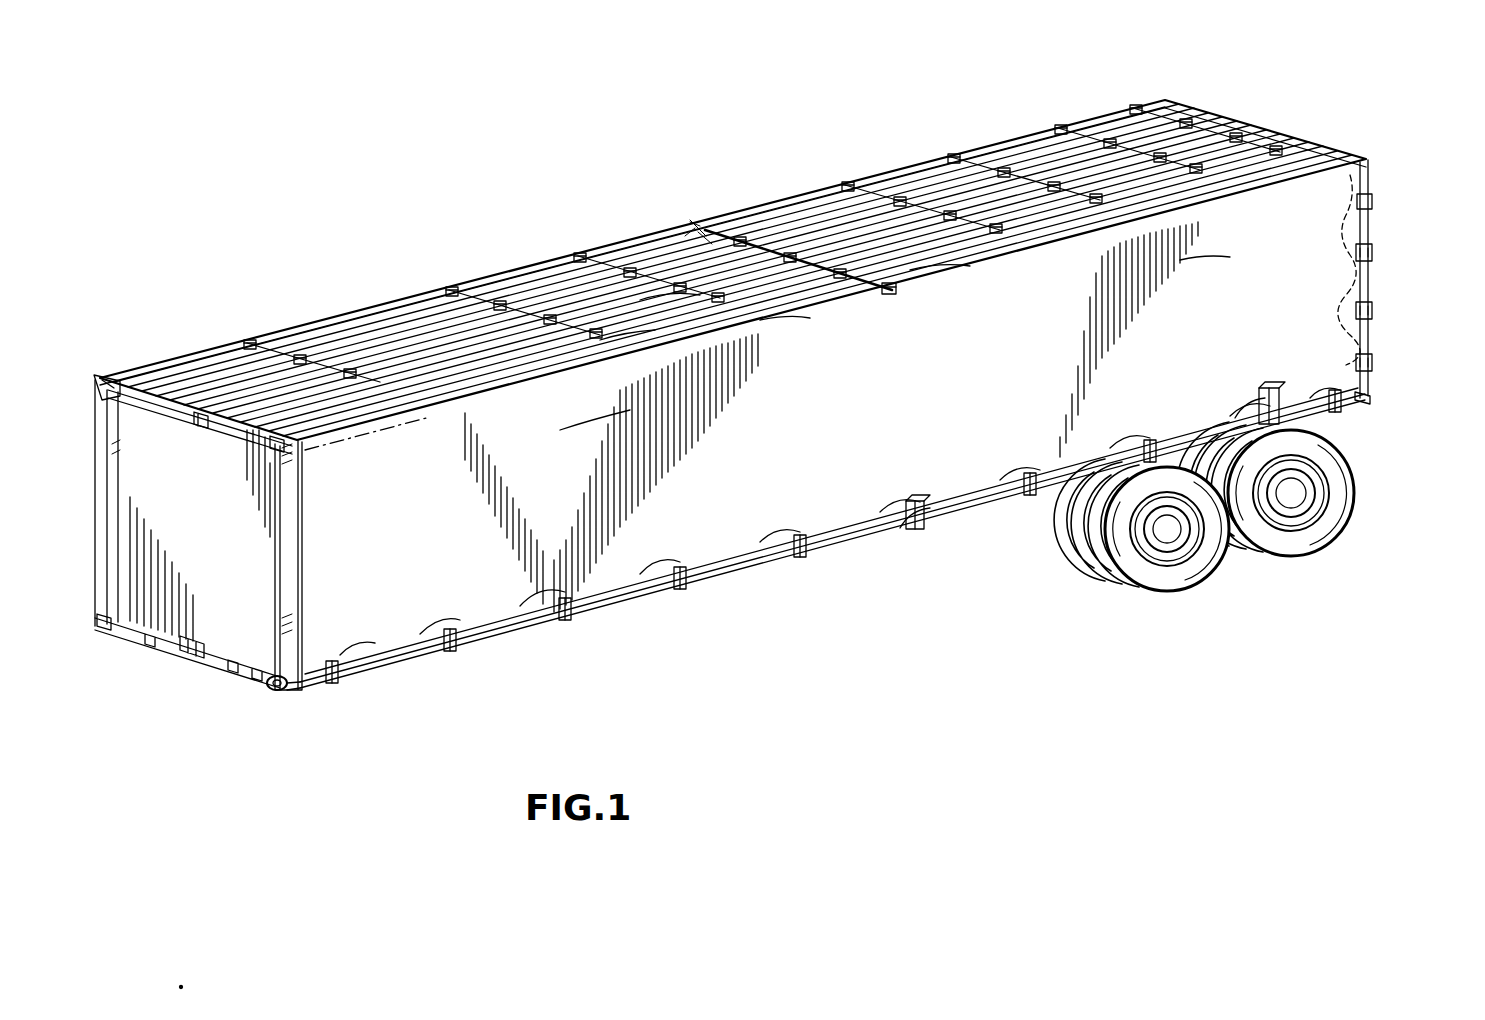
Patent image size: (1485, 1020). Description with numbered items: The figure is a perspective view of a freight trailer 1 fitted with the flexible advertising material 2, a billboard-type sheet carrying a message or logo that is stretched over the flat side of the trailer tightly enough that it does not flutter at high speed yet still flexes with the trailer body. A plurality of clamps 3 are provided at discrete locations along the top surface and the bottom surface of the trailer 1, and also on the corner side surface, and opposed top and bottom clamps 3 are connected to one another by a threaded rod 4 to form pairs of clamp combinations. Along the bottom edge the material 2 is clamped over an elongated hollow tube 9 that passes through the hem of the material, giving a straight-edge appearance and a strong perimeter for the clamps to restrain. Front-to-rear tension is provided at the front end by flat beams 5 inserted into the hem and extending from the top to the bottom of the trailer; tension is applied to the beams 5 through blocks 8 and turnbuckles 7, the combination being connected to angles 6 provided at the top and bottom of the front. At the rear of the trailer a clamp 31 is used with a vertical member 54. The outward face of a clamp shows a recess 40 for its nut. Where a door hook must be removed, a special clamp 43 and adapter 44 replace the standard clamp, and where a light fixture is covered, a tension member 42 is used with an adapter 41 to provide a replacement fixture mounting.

The trailer 1 is at (193, 553).
The flexible advertising material 2 is at (748, 474).
The clamp 3 is at (450, 645).
The clamp 31 is at (1372, 200).
The threaded rod 4 is at (1185, 102).
The flat beam 5 is at (100, 396).
The angle 6 is at (200, 424).
The turnbuckle 7 is at (148, 640).
The block 8 is at (273, 692).
The hollow tube 9 is at (605, 586).
The recess 40 is at (918, 496).
The adapter 41 is at (897, 302).
The tension member 42 is at (908, 285).
The special clamp 43 is at (922, 524).
The adapter 44 is at (1268, 398).
The vertical member 54 is at (1372, 238).